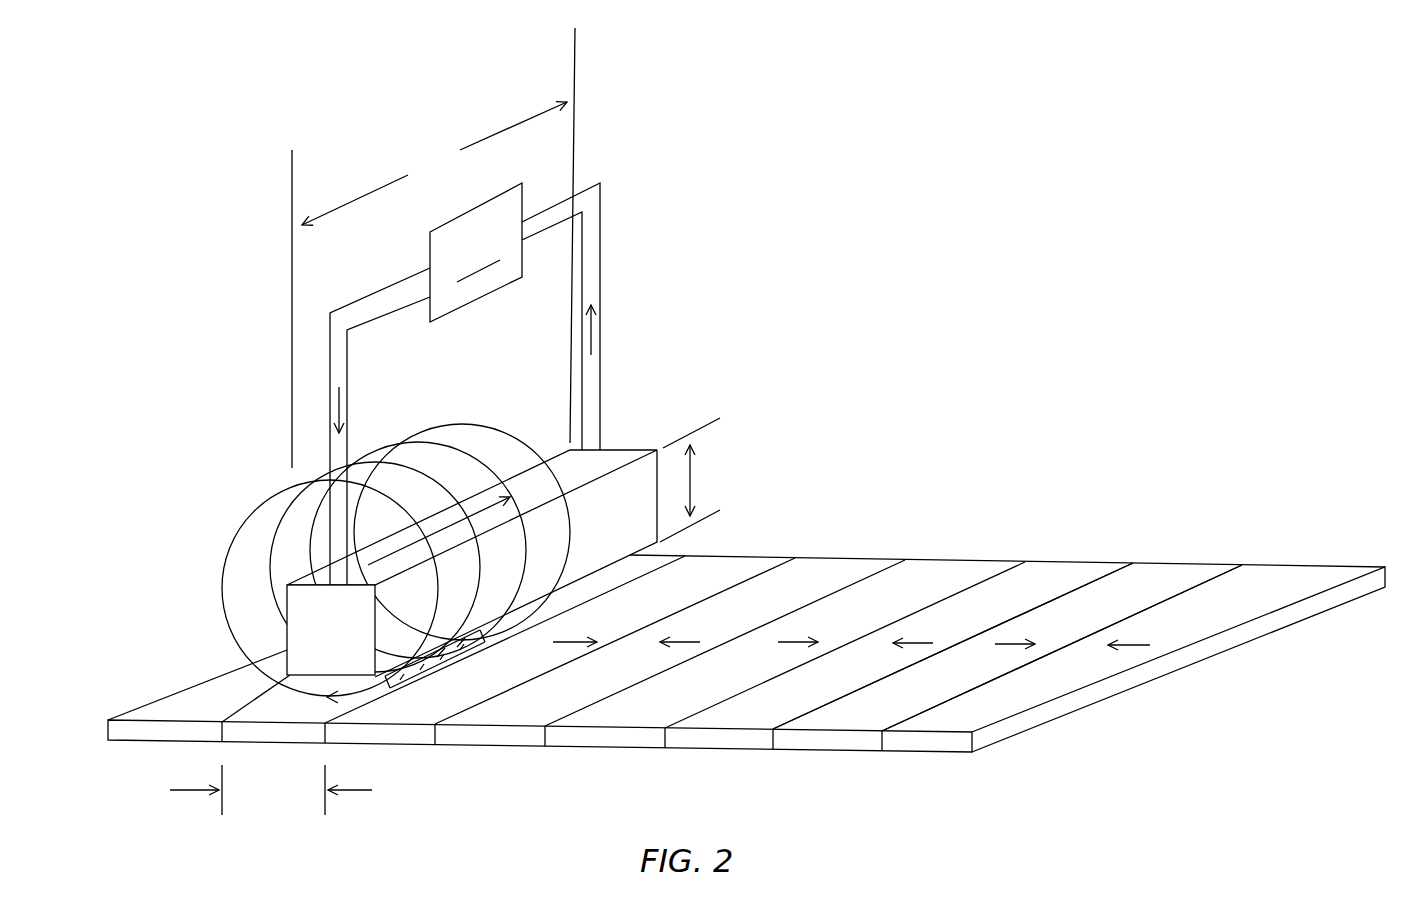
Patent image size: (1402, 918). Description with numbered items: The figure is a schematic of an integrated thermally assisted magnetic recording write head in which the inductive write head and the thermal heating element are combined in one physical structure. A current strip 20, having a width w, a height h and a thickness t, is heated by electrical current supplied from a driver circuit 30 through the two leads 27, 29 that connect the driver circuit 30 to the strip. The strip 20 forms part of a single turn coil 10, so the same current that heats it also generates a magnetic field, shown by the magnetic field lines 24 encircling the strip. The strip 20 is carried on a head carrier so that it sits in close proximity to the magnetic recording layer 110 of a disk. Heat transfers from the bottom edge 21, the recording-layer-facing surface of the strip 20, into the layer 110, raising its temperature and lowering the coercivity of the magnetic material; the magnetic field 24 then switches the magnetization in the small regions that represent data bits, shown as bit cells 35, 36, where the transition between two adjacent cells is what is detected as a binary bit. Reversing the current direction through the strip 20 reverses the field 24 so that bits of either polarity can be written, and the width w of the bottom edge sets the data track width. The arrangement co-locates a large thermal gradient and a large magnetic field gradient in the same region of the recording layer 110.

The single turn coil 10 is at (512, 306).
The current strip 20 is at (573, 482).
The bottom edge 21 is at (205, 668).
The magnetic field lines 24 is at (247, 517).
The first lead wire 27 is at (333, 346).
The second lead wire 29 is at (592, 290).
The driver circuit 30 is at (476, 252).
The bit cell 35 is at (1058, 575).
The bit cell 36 is at (1175, 575).
The magnetic recording layer 110 is at (1030, 718).